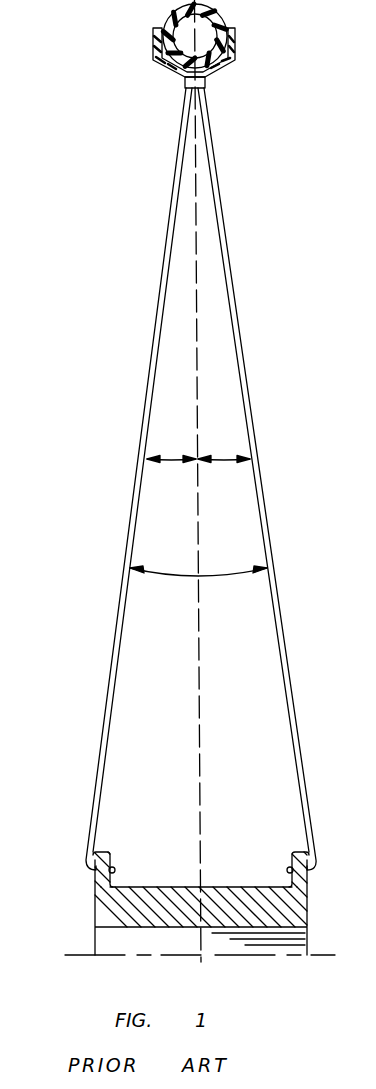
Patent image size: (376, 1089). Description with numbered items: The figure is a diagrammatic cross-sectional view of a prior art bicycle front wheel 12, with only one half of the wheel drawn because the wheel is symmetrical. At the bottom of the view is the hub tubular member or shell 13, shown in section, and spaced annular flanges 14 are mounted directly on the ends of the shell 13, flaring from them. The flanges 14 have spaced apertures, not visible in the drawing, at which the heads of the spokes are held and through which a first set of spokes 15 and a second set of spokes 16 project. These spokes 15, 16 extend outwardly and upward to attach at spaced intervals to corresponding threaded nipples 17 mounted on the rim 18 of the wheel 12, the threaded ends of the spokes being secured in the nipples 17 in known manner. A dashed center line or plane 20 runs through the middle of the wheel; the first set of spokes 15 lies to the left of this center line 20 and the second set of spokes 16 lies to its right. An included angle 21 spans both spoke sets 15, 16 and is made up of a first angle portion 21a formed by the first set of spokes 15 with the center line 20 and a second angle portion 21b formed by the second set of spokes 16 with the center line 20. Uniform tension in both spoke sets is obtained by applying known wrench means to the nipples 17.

The bicycle front wheel 12 is at (187, 473).
The hub tubular member or shell 13 is at (308, 905).
The annular flanges 14 is at (110, 852).
The first set of spokes 15 is at (108, 664).
The second set of spokes 16 is at (289, 654).
The nipples 17 is at (186, 92).
The rim 18 is at (236, 45).
The center line or plane 20 is at (198, 698).
The included angle 21 is at (187, 574).
The first angle portion 21a is at (168, 464).
The second angle portion 21b is at (228, 463).